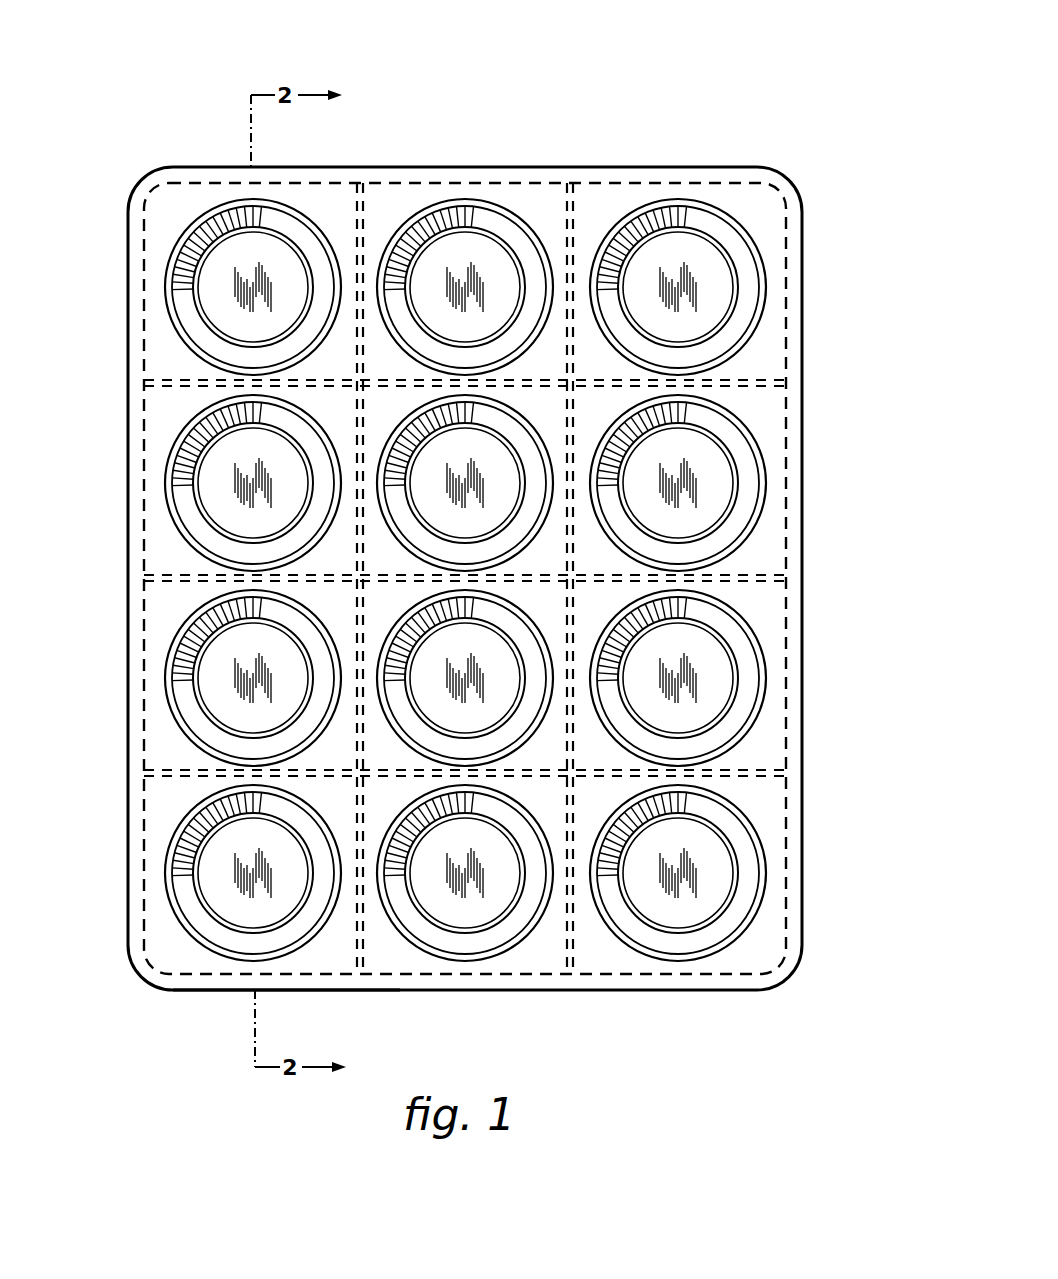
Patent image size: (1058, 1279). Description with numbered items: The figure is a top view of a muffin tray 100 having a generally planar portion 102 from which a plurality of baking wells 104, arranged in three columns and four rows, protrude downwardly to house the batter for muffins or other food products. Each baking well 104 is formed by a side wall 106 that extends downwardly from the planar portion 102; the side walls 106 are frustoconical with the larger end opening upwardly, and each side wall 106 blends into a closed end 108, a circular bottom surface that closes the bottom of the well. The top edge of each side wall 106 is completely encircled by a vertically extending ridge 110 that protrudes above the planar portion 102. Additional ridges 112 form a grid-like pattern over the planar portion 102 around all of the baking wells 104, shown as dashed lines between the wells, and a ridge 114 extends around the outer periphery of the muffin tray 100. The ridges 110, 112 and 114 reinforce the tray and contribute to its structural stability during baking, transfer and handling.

The muffin tray 100 is at (686, 109).
The planar portion 102 is at (770, 948).
The baking well 104 is at (718, 287).
The side wall 106 is at (193, 715).
The closed end 108 is at (443, 465).
The ridge 110 is at (440, 958).
The ridges 112 is at (167, 383).
The ridge 114 is at (197, 985).